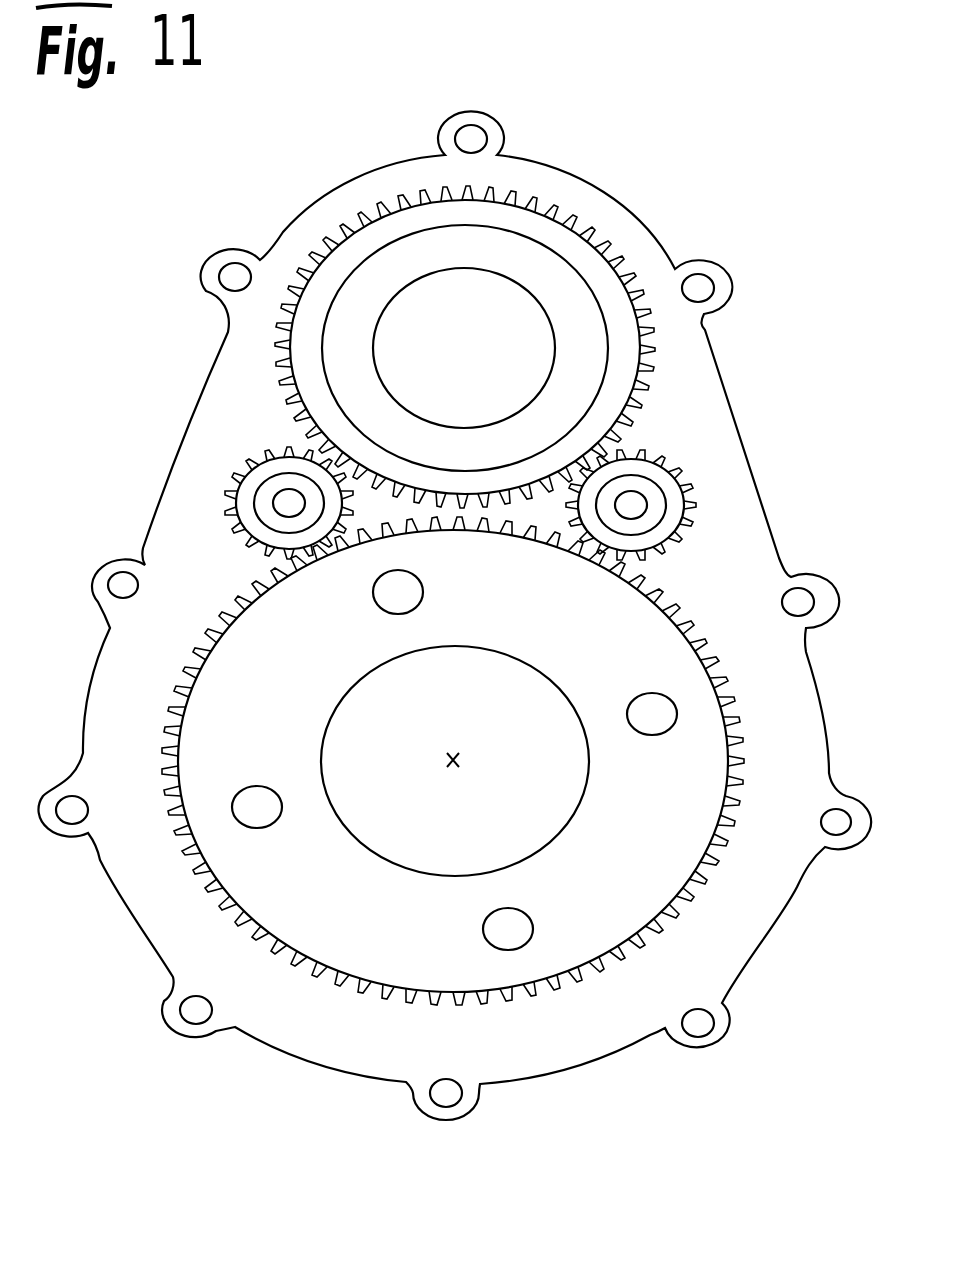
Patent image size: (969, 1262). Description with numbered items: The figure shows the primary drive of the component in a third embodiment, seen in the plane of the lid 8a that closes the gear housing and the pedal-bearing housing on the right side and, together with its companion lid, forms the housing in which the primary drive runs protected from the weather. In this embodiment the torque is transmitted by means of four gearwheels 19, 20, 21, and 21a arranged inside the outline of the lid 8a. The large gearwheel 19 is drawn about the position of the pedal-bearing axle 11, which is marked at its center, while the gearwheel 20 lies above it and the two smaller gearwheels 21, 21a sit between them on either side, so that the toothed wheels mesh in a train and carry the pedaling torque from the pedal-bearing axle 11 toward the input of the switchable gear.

The lid 8a is at (592, 1043).
The pedal-bearing axle 11 is at (461, 760).
The gearwheel 19 is at (388, 941).
The gearwheel 20 is at (491, 237).
The gearwheel 21 is at (673, 500).
The gearwheel 21a is at (257, 478).